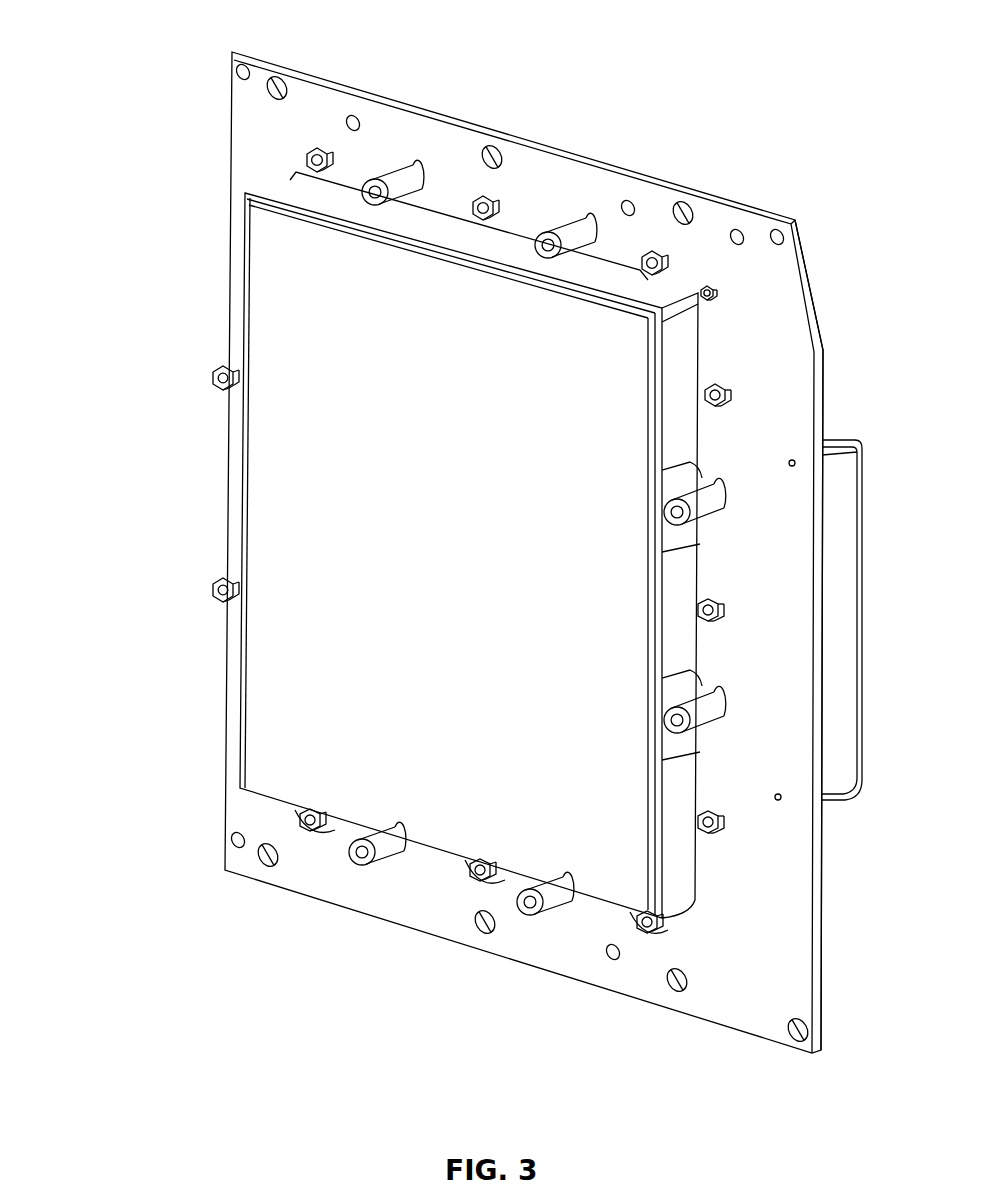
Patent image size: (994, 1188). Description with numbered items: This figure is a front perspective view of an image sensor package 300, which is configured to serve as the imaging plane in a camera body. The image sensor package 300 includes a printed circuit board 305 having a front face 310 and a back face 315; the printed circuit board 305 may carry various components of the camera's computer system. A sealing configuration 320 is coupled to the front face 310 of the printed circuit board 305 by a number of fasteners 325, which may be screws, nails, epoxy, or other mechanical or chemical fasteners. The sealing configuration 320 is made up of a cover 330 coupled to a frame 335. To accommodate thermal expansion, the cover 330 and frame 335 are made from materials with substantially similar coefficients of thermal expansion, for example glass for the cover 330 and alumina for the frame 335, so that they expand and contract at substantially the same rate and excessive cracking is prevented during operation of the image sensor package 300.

The image sensor package 300 is at (745, 62).
The printed circuit board 305 is at (765, 886).
The front face 310 is at (768, 315).
The back face 315 is at (912, 237).
The sealing configuration 320 is at (110, 157).
The fasteners 325 is at (223, 380).
The cover 330 is at (283, 302).
The frame 335 is at (292, 194).